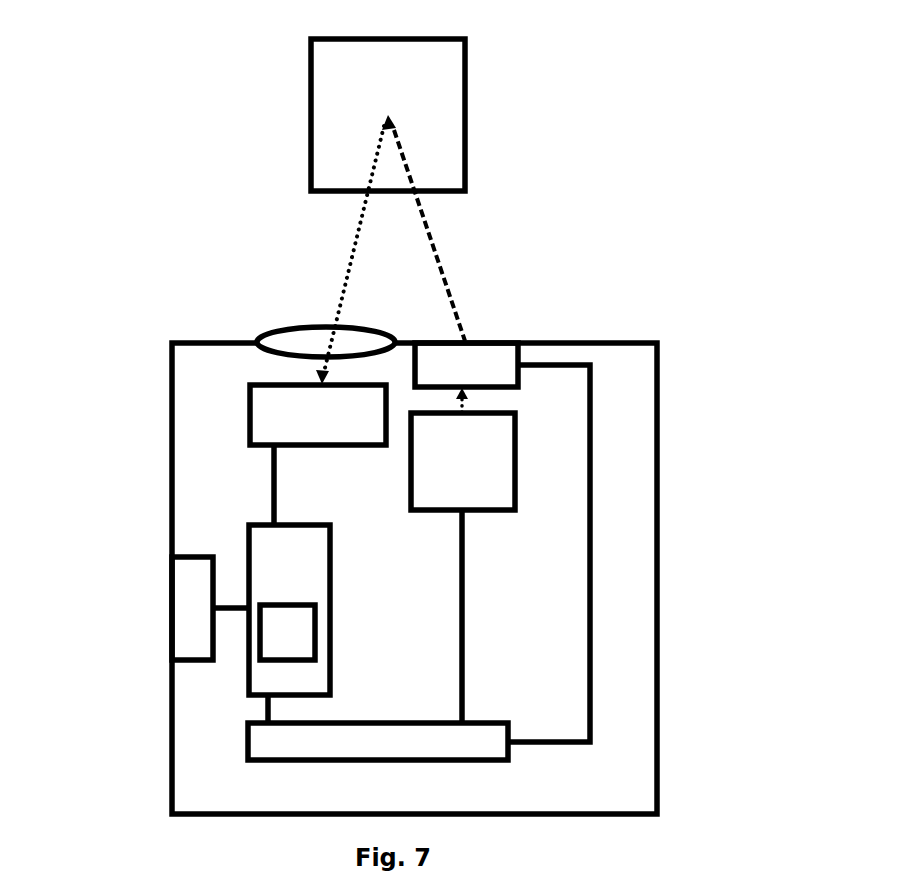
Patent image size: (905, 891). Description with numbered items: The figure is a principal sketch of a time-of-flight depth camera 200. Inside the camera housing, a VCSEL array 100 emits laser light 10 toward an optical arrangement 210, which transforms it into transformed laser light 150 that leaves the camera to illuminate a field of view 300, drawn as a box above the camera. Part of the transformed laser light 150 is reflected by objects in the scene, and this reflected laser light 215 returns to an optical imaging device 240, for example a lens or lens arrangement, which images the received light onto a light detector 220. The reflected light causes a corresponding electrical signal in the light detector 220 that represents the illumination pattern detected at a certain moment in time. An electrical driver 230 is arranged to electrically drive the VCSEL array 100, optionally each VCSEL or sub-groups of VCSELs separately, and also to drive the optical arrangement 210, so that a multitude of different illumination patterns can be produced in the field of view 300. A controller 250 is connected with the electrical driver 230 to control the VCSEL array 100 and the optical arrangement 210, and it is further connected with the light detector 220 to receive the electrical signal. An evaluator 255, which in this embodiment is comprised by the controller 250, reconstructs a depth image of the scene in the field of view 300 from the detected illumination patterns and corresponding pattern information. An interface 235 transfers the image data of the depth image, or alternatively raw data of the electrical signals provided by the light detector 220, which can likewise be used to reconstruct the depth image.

The laser light 10 is at (472, 395).
The VCSEL array 100 is at (430, 513).
The transformed laser light 150 is at (424, 217).
The time-of-flight depth camera 200 is at (170, 397).
The optical arrangement 210 is at (500, 340).
The reflected laser light 215 is at (355, 225).
The light detector 220 is at (360, 448).
The electrical driver 230 is at (352, 762).
The interface 235 is at (170, 607).
The optical imaging device 240 is at (282, 330).
The controller 250 is at (257, 520).
The evaluator 255 is at (317, 648).
The field of view 300 is at (467, 117).